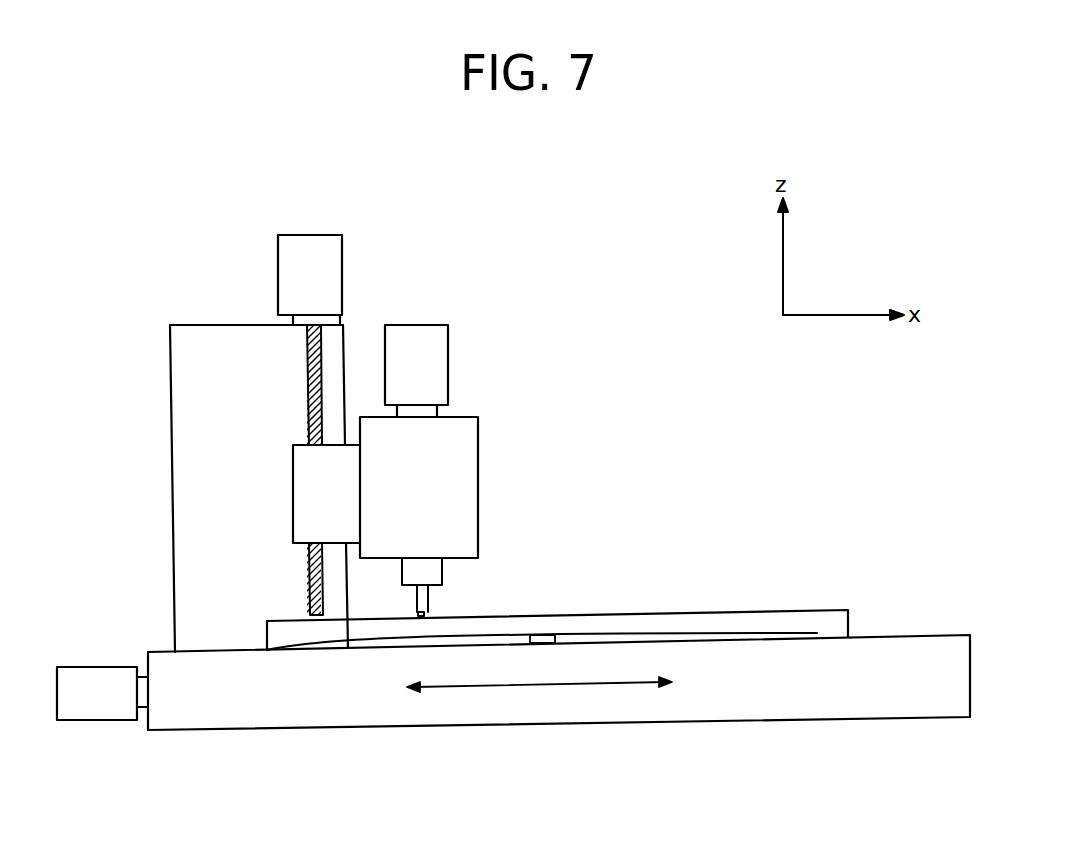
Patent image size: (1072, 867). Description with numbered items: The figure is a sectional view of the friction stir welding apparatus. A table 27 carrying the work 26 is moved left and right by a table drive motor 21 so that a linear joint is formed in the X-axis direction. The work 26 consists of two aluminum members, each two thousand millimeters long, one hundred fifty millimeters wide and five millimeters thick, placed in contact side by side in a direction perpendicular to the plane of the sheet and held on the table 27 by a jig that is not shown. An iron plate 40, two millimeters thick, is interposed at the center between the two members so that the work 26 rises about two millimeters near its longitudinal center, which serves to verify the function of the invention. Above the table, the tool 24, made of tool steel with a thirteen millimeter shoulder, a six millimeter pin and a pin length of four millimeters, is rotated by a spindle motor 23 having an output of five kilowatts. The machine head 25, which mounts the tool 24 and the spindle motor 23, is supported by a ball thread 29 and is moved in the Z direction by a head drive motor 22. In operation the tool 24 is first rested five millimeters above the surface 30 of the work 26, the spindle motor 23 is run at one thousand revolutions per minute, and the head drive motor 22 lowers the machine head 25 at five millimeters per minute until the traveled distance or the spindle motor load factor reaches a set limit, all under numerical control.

The table drive motor 21 is at (98, 708).
The head drive motor 22 is at (300, 272).
The spindle motor 23 is at (433, 363).
The tool 24 is at (422, 598).
The machine head 25 is at (462, 490).
The work 26 is at (785, 627).
The table 27 is at (950, 680).
The ball thread 29 is at (308, 388).
The surface 30 is at (713, 615).
The iron plate 40 is at (543, 643).